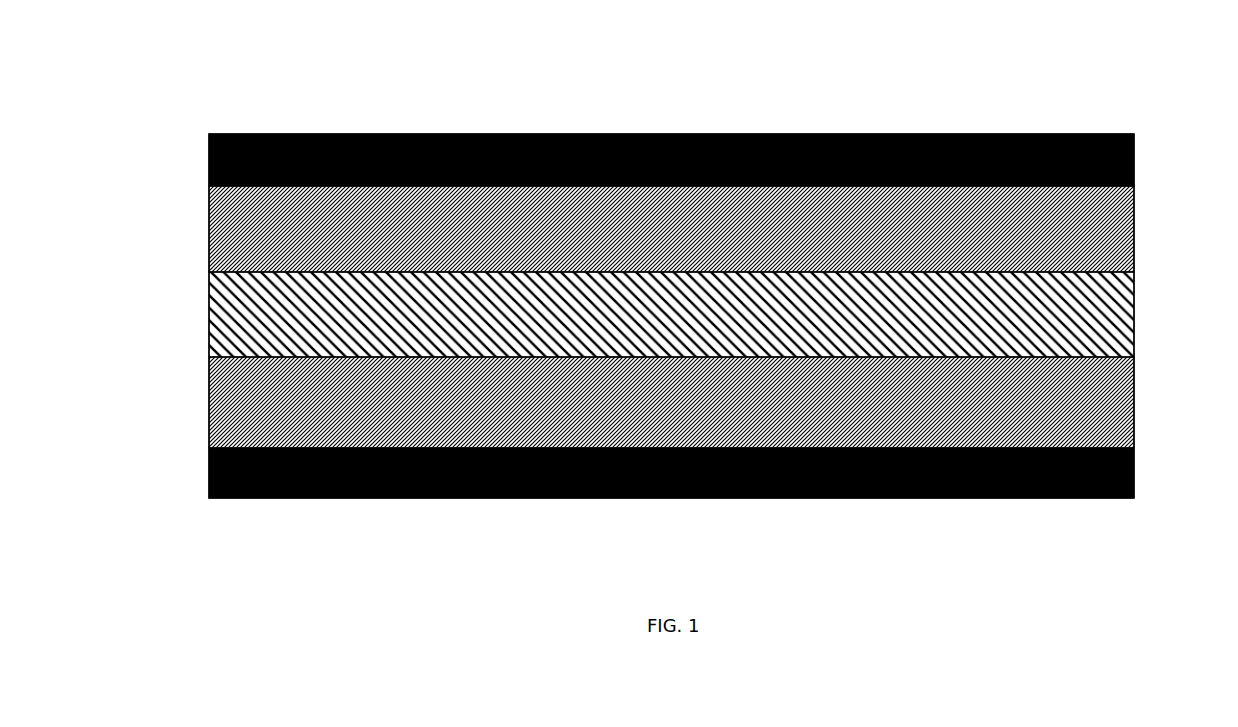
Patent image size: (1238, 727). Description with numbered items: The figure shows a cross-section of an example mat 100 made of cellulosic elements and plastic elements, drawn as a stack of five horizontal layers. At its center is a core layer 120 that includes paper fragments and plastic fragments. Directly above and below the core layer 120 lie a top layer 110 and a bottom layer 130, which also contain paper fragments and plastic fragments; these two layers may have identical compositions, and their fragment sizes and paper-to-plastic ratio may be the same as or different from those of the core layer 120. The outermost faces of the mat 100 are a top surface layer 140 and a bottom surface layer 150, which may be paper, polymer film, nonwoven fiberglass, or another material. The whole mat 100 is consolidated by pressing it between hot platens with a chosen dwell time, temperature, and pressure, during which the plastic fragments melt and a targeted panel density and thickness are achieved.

The mat 100 is at (186, 53).
The top layer 110 is at (1149, 231).
The core layer 120 is at (1149, 317).
The bottom layer 130 is at (1149, 399).
The top surface layer 140 is at (1149, 151).
The bottom surface layer 150 is at (1145, 480).